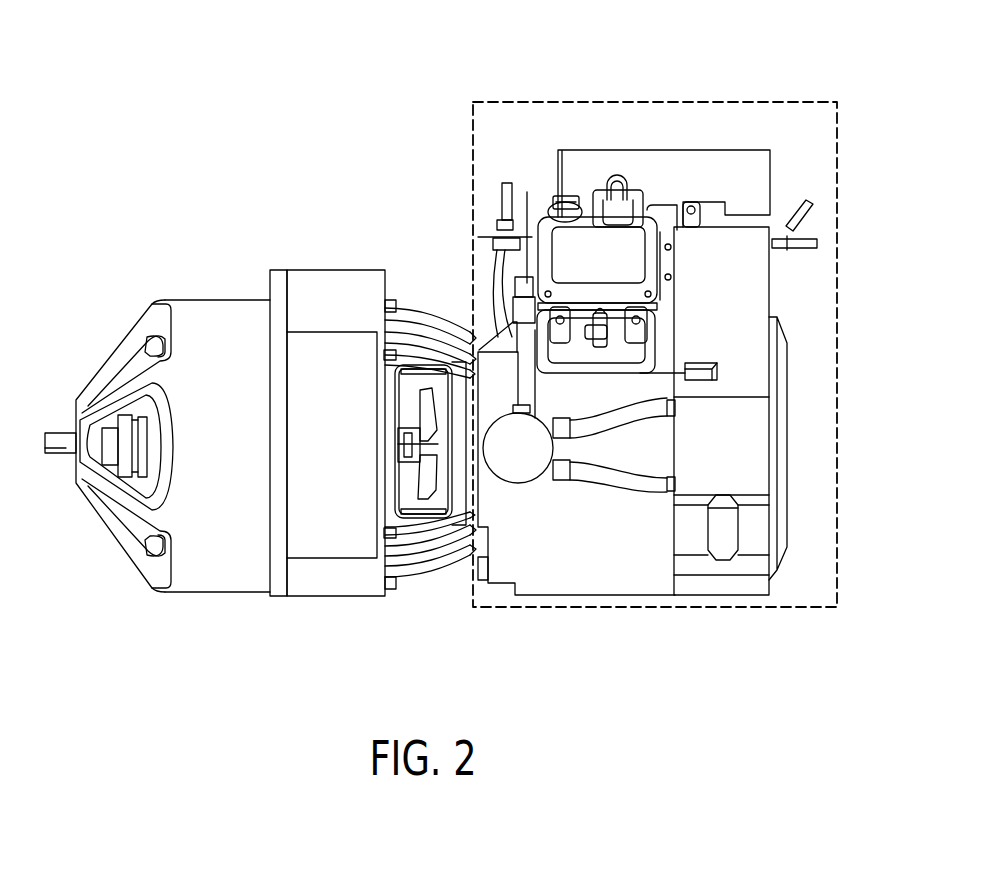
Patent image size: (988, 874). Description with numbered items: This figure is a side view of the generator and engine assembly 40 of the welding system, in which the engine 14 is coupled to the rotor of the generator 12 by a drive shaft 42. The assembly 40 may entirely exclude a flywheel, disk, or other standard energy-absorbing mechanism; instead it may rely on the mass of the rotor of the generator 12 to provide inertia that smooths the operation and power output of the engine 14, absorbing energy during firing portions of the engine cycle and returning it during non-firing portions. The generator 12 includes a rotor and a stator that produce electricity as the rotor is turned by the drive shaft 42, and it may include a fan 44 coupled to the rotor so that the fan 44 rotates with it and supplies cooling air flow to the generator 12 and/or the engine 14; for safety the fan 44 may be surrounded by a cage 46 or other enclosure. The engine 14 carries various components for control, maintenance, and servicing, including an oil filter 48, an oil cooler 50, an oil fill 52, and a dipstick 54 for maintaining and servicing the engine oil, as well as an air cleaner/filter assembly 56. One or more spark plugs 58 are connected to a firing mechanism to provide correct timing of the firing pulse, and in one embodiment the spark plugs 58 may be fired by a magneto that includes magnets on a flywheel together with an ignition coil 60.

The generator 12 is at (287, 296).
The engine 14 is at (803, 100).
The generator and engine assembly 40 is at (389, 166).
The drive shaft 42 is at (443, 425).
The fan 44 is at (414, 500).
The cage 46 is at (427, 568).
The oil filter 48 is at (525, 480).
The oil cooler 50 is at (750, 462).
The oil fill 52 is at (568, 197).
The dipstick 54 is at (508, 182).
The air cleaner/filter assembly 56 is at (715, 150).
The spark plug 58 is at (643, 334).
The ignition coil 60 is at (712, 375).